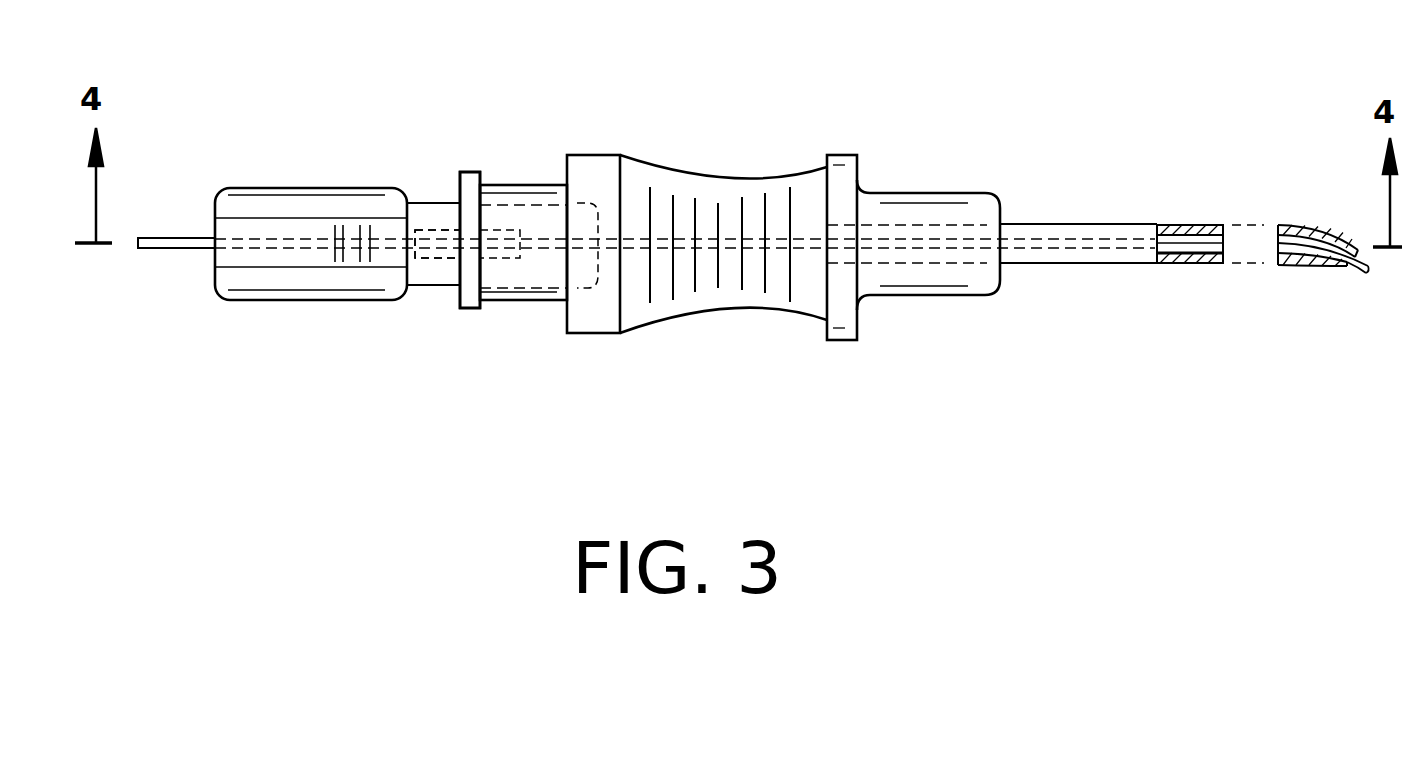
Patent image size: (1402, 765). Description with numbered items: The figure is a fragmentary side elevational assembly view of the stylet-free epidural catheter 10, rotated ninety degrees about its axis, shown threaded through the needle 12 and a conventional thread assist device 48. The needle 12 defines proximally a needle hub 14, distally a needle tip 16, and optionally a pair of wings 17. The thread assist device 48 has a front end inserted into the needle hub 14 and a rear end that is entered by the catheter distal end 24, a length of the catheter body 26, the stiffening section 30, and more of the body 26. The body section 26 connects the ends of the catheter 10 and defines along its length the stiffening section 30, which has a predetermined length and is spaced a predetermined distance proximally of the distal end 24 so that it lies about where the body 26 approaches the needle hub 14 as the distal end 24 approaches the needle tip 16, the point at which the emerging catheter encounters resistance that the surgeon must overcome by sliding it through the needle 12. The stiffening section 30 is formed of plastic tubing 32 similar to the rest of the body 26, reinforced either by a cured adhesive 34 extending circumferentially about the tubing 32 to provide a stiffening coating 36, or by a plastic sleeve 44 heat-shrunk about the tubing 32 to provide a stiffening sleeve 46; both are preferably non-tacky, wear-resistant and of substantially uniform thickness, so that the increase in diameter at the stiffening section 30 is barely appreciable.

The stylet-free epidural catheter 10 is at (160, 230).
The needle 12 is at (1189, 220).
The needle hub 14 is at (513, 300).
The needle tip 16 is at (1330, 230).
The wings 17 is at (845, 180).
The distal end 24 is at (1368, 274).
The body section 26 is at (274, 256).
The stiffening section 30 is at (433, 256).
The plastic tubing 32 is at (147, 252).
The cured adhesive 34 is at (456, 230).
The stiffening coating 36 is at (459, 232).
The plastic sleeve 44 is at (427, 215).
The stiffening sleeve 46 is at (428, 217).
The thread assist device 48 is at (272, 187).